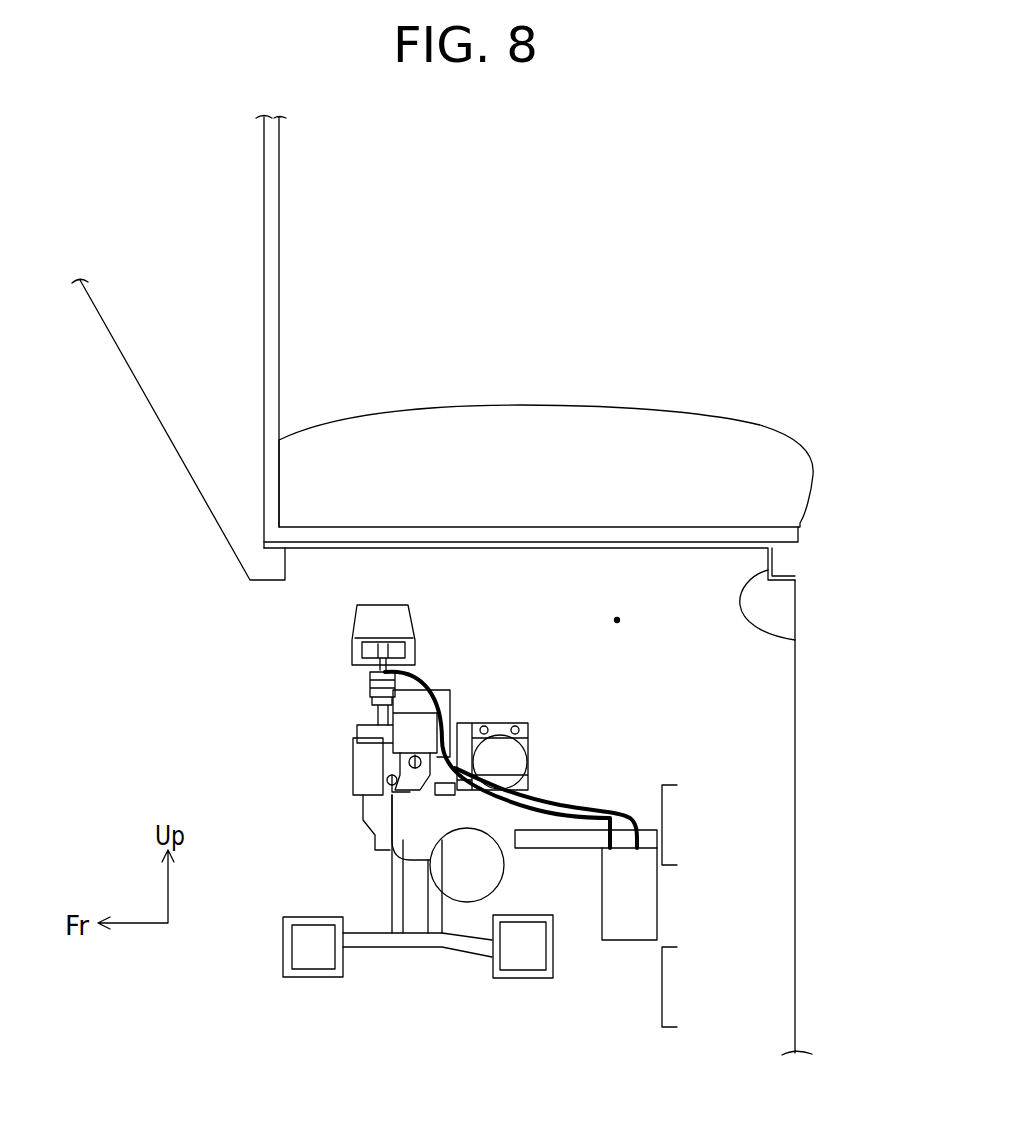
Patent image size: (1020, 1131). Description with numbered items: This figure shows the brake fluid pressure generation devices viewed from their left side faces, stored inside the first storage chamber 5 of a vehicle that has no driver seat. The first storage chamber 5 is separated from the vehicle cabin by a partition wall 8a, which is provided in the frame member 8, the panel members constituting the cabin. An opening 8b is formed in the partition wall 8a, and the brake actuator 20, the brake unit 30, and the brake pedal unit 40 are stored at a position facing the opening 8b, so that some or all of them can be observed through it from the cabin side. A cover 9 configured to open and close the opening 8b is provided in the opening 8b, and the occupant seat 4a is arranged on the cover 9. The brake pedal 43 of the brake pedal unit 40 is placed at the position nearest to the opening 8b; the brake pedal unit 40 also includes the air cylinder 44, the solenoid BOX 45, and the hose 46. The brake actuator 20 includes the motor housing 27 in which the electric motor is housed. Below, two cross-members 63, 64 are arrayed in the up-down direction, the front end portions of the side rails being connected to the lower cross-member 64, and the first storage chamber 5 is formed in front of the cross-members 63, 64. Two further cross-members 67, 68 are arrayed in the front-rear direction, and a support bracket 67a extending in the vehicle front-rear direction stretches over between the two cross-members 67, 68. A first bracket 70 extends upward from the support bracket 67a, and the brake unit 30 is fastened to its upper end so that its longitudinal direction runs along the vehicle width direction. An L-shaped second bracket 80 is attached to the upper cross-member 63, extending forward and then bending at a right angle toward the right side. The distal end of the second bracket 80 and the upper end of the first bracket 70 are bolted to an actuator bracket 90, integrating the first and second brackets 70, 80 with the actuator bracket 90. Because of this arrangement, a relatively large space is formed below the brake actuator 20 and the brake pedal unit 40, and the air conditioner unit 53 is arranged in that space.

The occupant seat 4a is at (289, 233).
The partition wall 8a is at (120, 325).
The first storage chamber 5 is at (617, 620).
The cover 9 is at (772, 560).
The opening 8b is at (795, 640).
The frame member 8 is at (812, 784).
The brake pedal 43 is at (352, 614).
The brake pedal unit 40 is at (325, 684).
The air cylinder 44 is at (378, 705).
The brake unit 30 is at (440, 682).
The brake actuator 20 is at (527, 705).
The motor housing 27 is at (513, 758).
The actuator bracket 90 is at (532, 795).
The hose 46 is at (620, 815).
The first bracket 70 is at (390, 900).
The support bracket 67a is at (378, 950).
The cross-member 67 is at (305, 942).
The cross-member 68 is at (520, 980).
The air conditioner unit 53 is at (466, 890).
The second bracket 80 is at (580, 850).
The solenoid BOX 45 is at (627, 942).
The cross-member 63 is at (672, 803).
The cross-member 64 is at (672, 995).